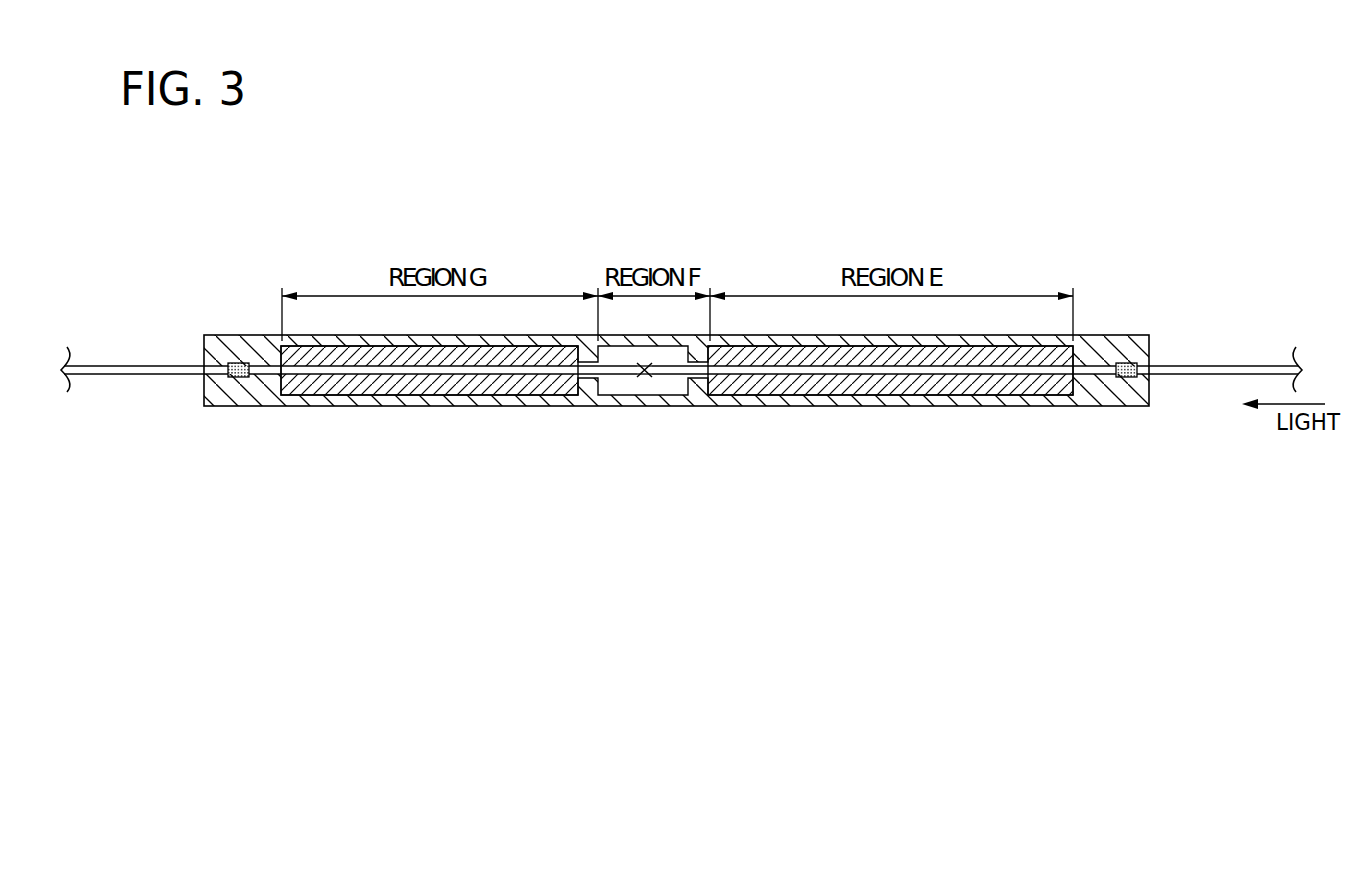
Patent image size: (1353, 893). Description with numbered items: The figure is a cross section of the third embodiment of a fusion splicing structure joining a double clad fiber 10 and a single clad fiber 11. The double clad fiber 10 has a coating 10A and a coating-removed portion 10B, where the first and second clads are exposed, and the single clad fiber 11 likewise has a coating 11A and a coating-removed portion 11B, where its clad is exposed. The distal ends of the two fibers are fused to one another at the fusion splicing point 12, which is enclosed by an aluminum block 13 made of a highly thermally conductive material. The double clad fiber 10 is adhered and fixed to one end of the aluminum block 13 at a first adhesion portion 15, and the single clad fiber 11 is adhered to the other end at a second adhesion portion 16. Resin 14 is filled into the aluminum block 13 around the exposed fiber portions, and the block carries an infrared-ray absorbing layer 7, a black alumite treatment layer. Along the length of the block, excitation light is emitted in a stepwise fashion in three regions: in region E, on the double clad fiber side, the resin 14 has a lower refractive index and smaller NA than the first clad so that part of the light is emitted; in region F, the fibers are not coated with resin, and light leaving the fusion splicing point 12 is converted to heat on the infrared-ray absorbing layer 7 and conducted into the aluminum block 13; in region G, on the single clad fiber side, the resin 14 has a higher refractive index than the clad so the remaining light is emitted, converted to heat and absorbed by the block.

The infrared-ray absorbing layer 7 is at (658, 394).
The double clad fiber 10 is at (1252, 366).
The coating 10A is at (1185, 366).
The coating-removed portion 10B is at (1018, 368).
The single clad fiber 11 is at (110, 365).
The coating 11A is at (168, 365).
The coating-removed portion 11B is at (352, 373).
The fusion splicing point 12 is at (643, 378).
The aluminum block 13 is at (256, 403).
The resin 14 is at (508, 381).
The first adhesion portion 15 is at (1128, 363).
The second adhesion portion 16 is at (241, 362).